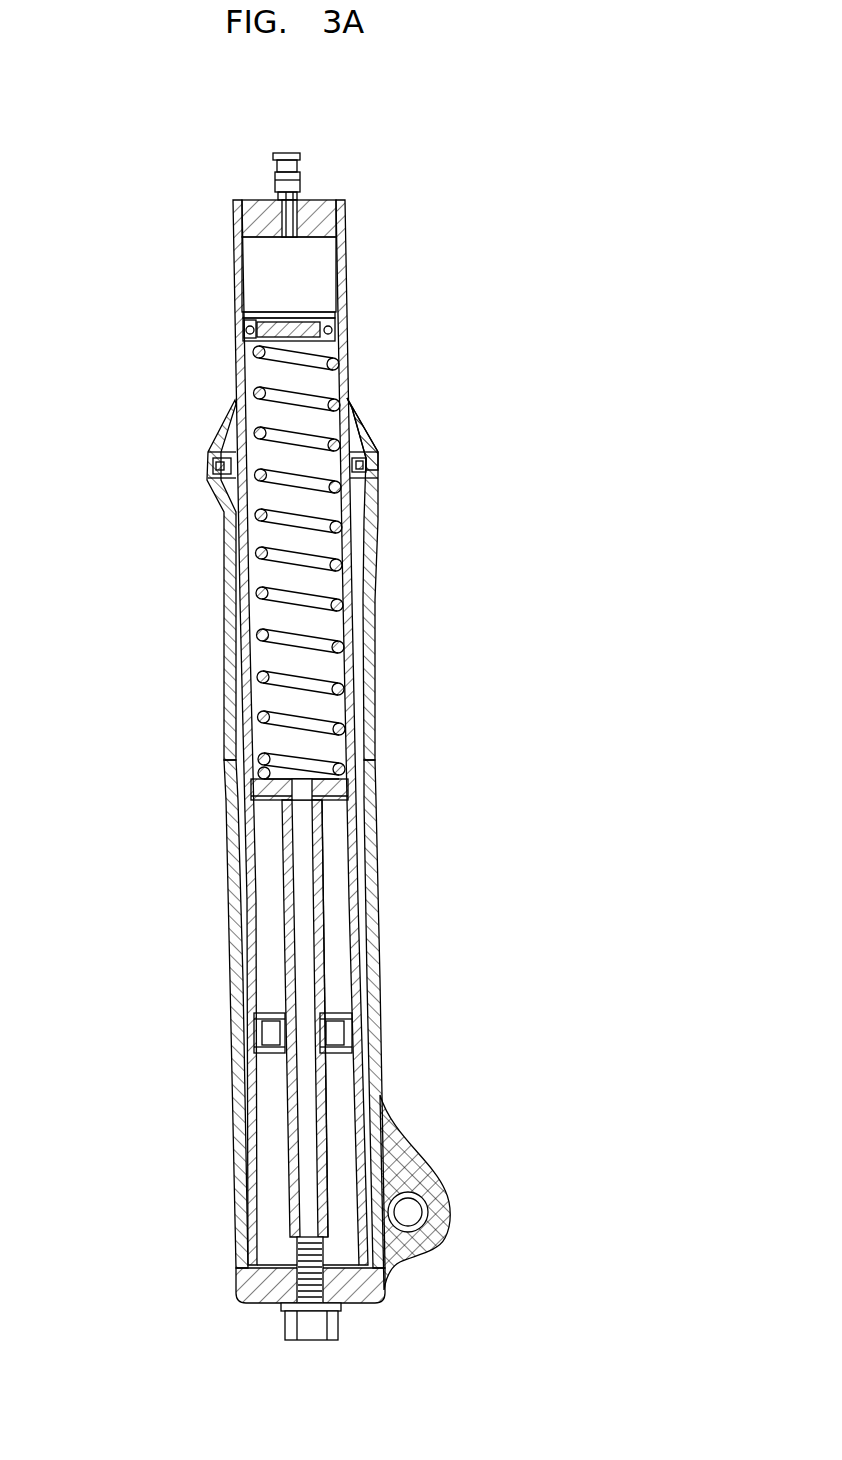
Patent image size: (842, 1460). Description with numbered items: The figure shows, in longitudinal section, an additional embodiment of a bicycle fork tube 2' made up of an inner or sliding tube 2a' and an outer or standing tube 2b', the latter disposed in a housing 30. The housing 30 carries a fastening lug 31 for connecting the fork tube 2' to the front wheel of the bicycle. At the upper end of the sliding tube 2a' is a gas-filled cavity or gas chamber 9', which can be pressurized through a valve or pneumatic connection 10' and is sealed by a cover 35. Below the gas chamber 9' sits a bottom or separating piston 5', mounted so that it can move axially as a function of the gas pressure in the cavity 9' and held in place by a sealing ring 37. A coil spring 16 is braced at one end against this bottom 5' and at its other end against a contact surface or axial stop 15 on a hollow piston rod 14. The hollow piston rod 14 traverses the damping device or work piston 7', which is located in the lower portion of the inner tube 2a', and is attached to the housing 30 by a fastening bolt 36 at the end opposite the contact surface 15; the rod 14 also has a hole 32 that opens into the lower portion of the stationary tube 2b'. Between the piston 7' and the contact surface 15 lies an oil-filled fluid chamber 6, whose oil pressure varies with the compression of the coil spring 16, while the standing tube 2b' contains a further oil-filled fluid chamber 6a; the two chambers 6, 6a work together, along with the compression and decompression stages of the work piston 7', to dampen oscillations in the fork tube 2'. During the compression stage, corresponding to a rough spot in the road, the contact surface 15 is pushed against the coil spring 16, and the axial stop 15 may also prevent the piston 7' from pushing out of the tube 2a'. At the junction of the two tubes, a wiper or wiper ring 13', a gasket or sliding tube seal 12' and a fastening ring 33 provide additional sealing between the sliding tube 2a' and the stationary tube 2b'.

The fork tube 2' is at (283, 850).
The inner or sliding tube 2a' is at (344, 1031).
The outer or standing tube 2b' is at (243, 579).
The bottom or separating piston 5' is at (344, 324).
The fluid chamber 6 is at (335, 897).
The fluid chamber 6a is at (347, 1085).
The damping device or work piston 7' is at (256, 1033).
The gas-filled cavity or gas chamber 9' is at (341, 274).
The valve or pneumatic connection 10' is at (361, 169).
The gasket or sliding tube seal 12' is at (423, 472).
The wiper or wiper ring 13' is at (407, 424).
The hollow piston rod 14 is at (290, 888).
The contact surface or axial stop 15 is at (336, 792).
The coil spring 16 is at (253, 580).
The housing 30 is at (363, 650).
The fastening lug 31 is at (433, 1207).
The hole 32 is at (293, 1238).
The fastening ring 33 is at (212, 472).
The cover 35 is at (255, 218).
The fastening bolt 36 is at (333, 1323).
The sealing ring 37 is at (245, 326).